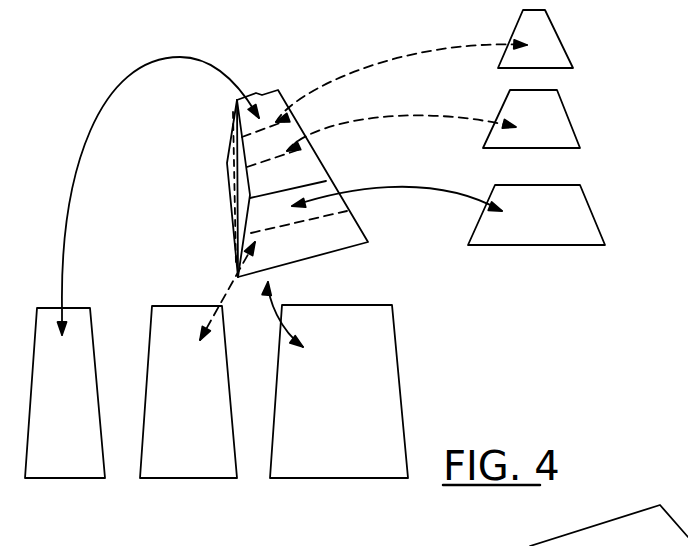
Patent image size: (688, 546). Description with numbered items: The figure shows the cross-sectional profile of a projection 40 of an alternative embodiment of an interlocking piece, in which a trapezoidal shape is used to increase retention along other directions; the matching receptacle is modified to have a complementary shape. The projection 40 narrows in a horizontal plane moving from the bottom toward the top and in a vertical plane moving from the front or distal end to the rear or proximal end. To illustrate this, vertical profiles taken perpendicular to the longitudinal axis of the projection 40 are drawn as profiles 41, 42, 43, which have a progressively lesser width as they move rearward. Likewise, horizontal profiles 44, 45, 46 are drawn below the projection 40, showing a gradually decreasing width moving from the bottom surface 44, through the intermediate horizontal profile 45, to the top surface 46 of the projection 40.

The projection 40 is at (270, 93).
The vertical profile 41 is at (577, 217).
The vertical profile 42 is at (557, 118).
The vertical profile 43 is at (550, 42).
The bottom surface 44 is at (340, 467).
The horizontal profile 45 is at (197, 468).
The top surface 46 is at (68, 468).